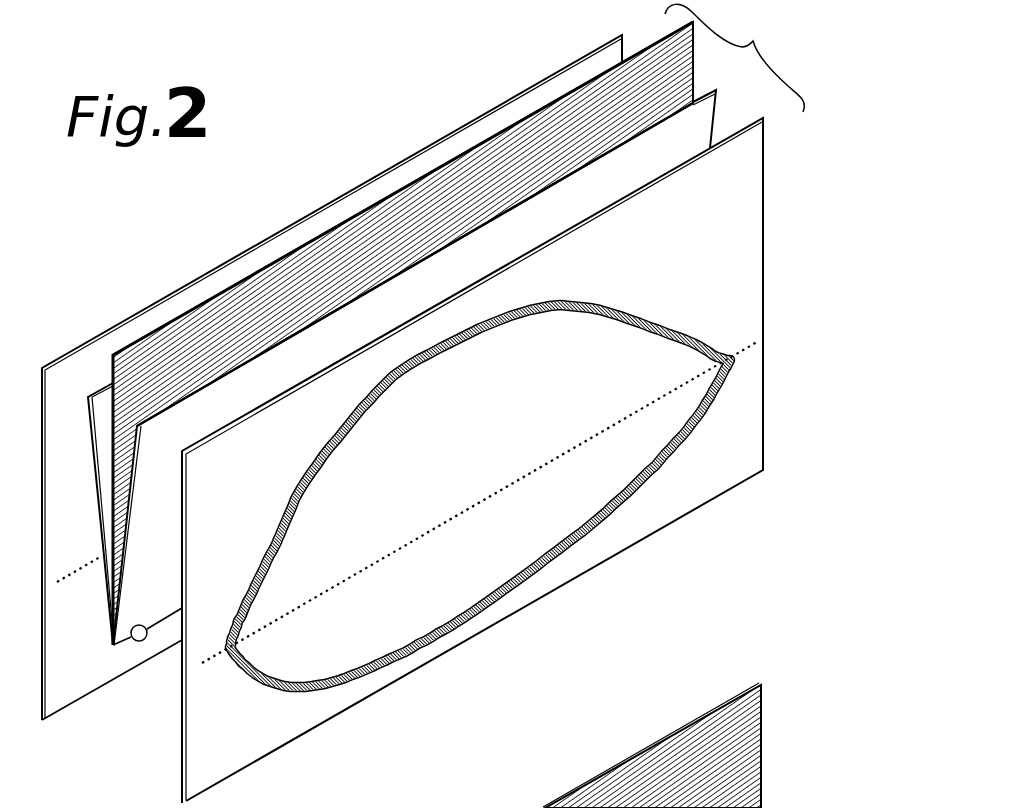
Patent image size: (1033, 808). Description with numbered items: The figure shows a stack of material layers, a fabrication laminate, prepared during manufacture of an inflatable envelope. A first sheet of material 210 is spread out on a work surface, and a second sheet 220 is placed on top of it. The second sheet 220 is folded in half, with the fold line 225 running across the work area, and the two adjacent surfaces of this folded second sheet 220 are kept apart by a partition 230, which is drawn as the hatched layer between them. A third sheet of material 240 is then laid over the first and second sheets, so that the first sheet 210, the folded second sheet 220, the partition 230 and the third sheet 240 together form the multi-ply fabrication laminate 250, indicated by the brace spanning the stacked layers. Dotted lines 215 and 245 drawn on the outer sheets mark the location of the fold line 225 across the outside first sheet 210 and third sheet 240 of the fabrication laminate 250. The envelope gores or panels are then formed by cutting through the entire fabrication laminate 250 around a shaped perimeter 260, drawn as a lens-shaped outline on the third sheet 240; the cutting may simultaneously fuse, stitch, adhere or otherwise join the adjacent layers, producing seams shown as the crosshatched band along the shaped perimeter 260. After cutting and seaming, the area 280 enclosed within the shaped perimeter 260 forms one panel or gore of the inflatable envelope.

The first sheet of material 210 is at (100, 683).
The dotted line 215 is at (75, 559).
The second sheet 220 is at (175, 561).
The fold line 225 is at (144, 641).
The partition 230 is at (187, 318).
The third sheet of material 240 is at (252, 741).
The dotted line 245 is at (479, 502).
The multi-ply fabrication laminate 250 is at (734, 58).
The shaped perimeter 260 is at (643, 314).
The panel or gore 280 is at (518, 549).